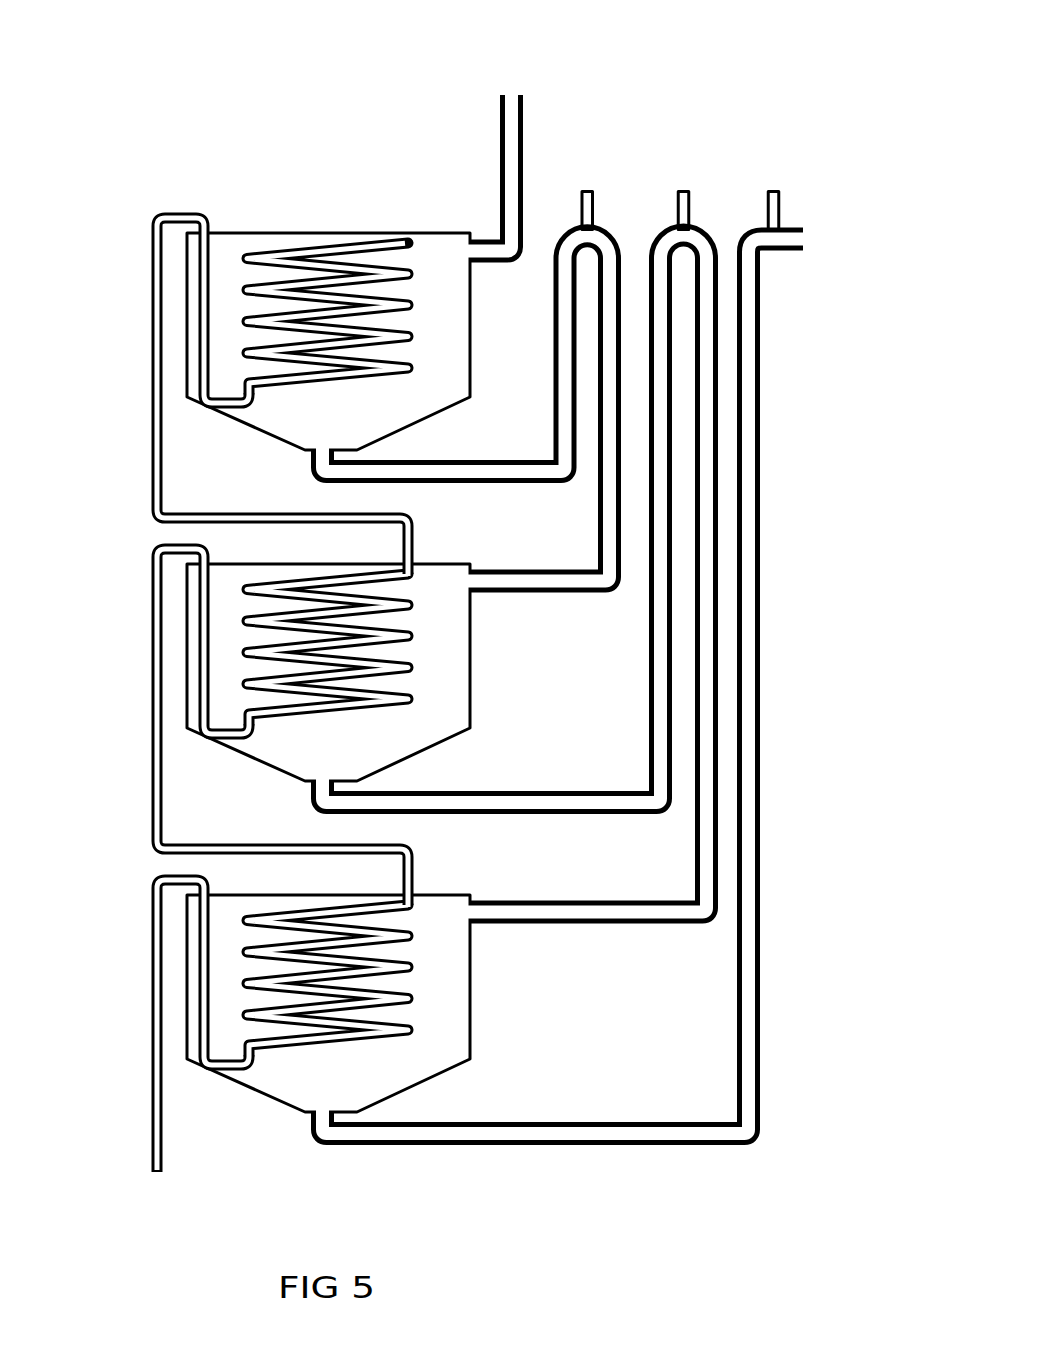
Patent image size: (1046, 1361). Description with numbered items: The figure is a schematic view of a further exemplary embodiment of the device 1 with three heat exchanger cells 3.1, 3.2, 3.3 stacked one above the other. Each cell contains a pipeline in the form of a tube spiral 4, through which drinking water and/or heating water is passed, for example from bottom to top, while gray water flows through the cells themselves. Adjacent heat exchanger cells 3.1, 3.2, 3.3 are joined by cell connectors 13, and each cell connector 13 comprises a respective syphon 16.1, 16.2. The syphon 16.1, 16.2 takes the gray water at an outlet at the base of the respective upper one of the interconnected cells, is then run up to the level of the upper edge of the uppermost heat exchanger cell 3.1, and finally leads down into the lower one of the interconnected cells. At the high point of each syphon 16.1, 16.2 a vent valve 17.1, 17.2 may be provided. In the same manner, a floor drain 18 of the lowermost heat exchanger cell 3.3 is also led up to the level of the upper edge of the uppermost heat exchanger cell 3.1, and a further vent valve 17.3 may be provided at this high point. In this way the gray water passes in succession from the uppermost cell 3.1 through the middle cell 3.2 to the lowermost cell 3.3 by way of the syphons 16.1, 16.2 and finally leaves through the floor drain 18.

The device 1 is at (179, 130).
The heat exchanger cell 3.1 is at (185, 292).
The heat exchanger cell 3.2 is at (185, 623).
The heat exchanger cell 3.3 is at (185, 949).
The tube spiral 4 is at (150, 422).
The cell connector 13 is at (569, 464).
The syphon 16.1 is at (607, 230).
The syphon 16.2 is at (703, 233).
The vent valve 17.1 is at (587, 190).
The vent valve 17.2 is at (683, 190).
The vent valve 17.3 is at (773, 190).
The floor drain 18 is at (757, 403).